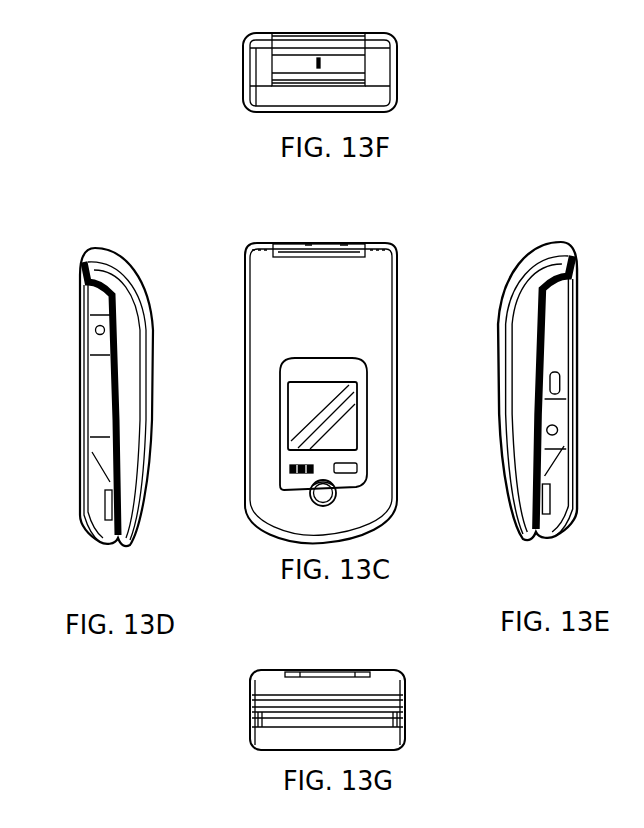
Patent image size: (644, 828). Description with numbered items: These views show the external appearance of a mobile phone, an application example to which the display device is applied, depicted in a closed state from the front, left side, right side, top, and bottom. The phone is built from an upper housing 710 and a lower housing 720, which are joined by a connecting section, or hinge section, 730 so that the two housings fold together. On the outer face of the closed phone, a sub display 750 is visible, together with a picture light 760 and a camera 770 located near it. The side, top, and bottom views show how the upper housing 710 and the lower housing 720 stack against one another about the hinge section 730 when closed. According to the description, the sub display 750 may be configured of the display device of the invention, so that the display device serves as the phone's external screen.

In FIG. 13F, the upper housing 710 is at (362, 32).
In FIG. 13C, the upper housing 710 is at (377, 277).
In FIG. 13D, the upper housing 710 is at (118, 250).
In FIG. 13E, the upper housing 710 is at (518, 505).
In FIG. 13G, the upper housing 710 is at (393, 682).
In FIG. 13F, the lower housing 720 is at (368, 112).
In FIG. 13D, the lower housing 720 is at (88, 515).
In FIG. 13E, the lower housing 720 is at (576, 272).
In FIG. 13G, the lower housing 720 is at (388, 742).
In FIG. 13F, the connecting section (hinge section) 730 is at (355, 65).
In FIG. 13C, the connecting section (hinge section) 730 is at (288, 243).
In FIG. 13C, the sub display 750 is at (323, 437).
In FIG. 13C, the picture light 760 is at (292, 468).
In FIG. 13C, the camera 770 is at (326, 497).